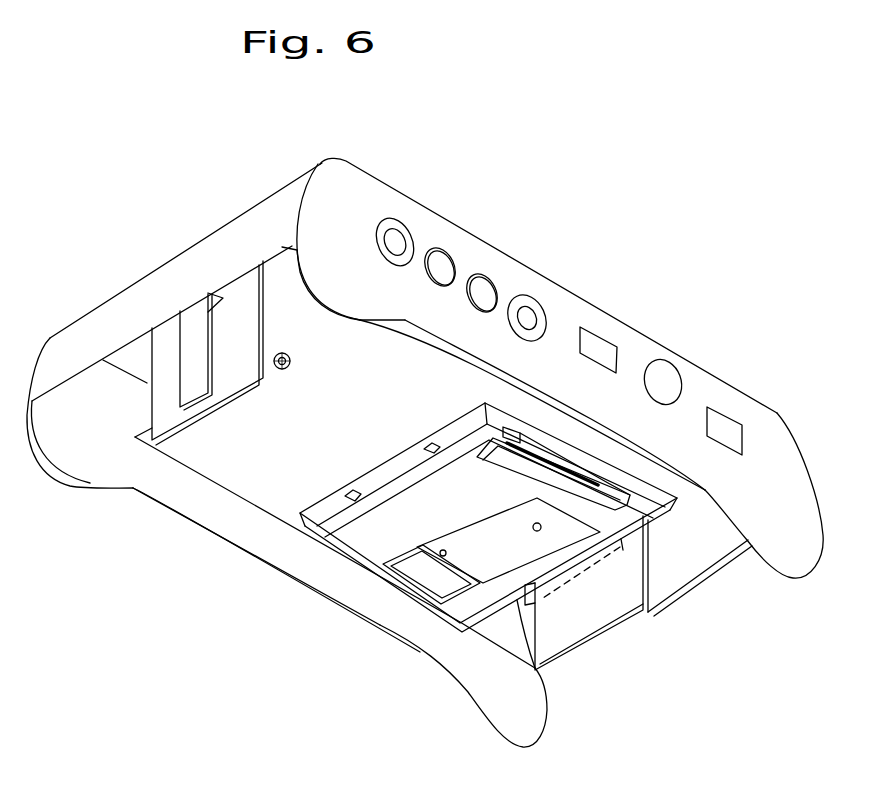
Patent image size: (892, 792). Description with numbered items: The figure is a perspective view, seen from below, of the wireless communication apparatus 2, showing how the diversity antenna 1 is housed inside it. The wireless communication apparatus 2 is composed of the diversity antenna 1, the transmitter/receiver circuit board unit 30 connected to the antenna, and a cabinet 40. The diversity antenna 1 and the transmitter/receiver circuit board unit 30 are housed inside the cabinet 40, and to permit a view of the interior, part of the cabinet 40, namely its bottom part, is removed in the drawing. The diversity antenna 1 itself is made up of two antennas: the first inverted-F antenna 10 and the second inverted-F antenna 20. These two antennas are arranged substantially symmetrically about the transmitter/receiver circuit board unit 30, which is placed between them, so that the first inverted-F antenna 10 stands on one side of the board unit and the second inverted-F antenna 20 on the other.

The diversity antenna 1 is at (258, 702).
The wireless communication apparatus 2 is at (434, 122).
The first inverted-F antenna 10 is at (167, 422).
The second inverted-F antenna 20 is at (557, 635).
The transmitter/receiver circuit board unit 30 is at (283, 492).
The cabinet 40 is at (812, 491).